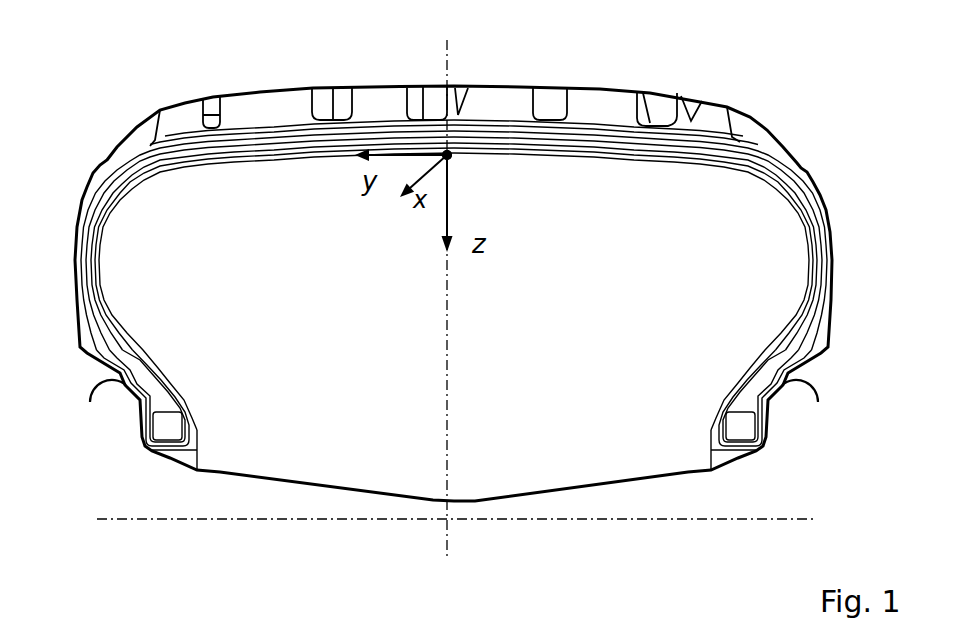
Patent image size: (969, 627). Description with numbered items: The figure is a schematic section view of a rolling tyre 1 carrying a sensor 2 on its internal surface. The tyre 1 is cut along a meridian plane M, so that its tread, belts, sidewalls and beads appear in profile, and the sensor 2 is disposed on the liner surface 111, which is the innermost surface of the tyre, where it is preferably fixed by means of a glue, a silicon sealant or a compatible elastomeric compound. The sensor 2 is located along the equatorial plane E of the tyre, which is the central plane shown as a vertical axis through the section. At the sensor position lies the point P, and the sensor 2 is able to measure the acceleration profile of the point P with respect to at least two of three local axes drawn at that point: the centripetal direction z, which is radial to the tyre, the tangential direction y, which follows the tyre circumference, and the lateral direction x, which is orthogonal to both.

The tyre 1 is at (60, 255).
The sensor 2 is at (447, 153).
The liner surface 111 is at (238, 157).
The point P is at (460, 169).
The equatorial plane E is at (447, 458).
The meridian plane M is at (600, 519).